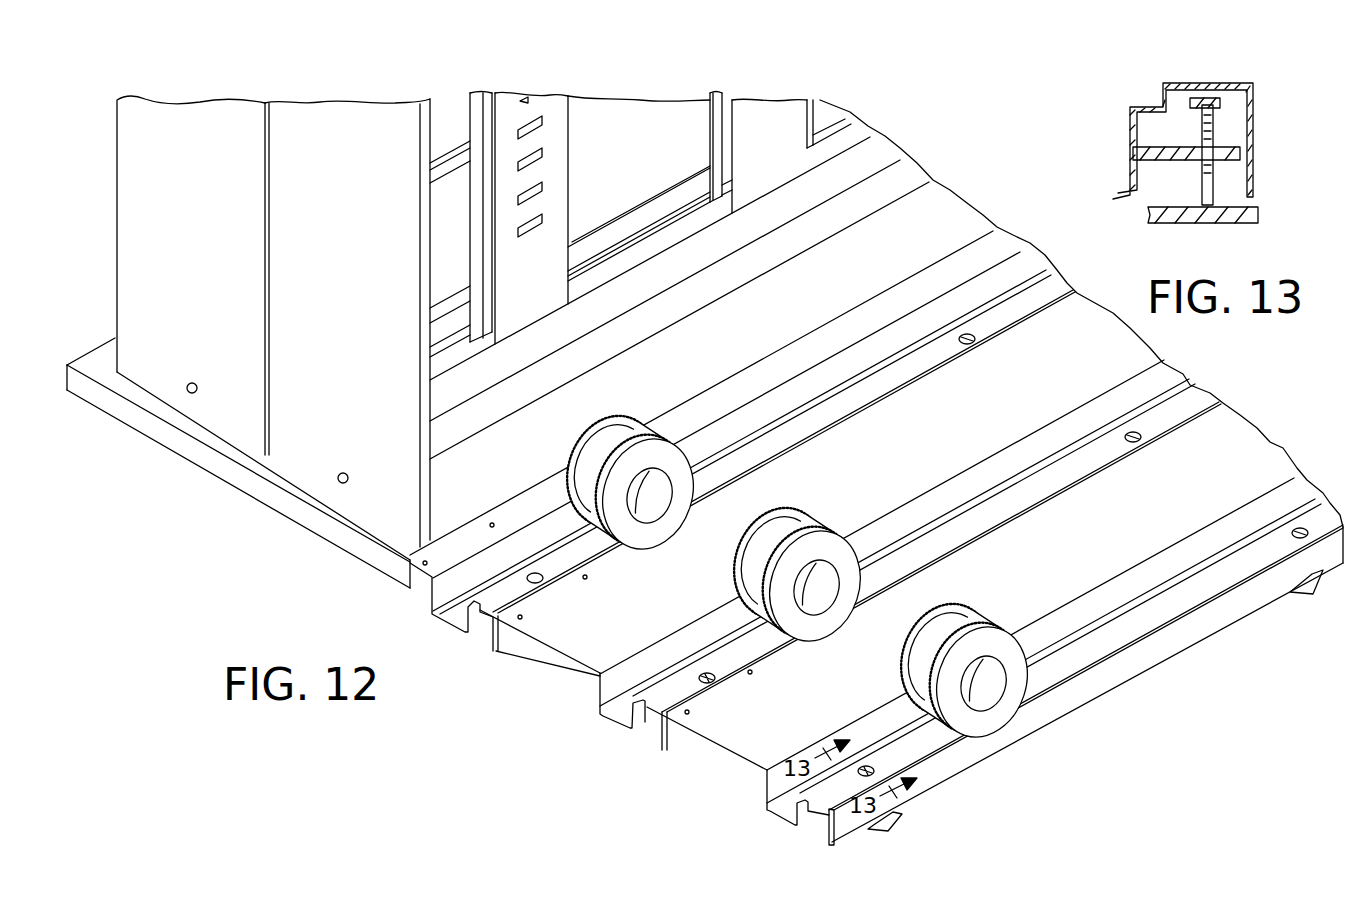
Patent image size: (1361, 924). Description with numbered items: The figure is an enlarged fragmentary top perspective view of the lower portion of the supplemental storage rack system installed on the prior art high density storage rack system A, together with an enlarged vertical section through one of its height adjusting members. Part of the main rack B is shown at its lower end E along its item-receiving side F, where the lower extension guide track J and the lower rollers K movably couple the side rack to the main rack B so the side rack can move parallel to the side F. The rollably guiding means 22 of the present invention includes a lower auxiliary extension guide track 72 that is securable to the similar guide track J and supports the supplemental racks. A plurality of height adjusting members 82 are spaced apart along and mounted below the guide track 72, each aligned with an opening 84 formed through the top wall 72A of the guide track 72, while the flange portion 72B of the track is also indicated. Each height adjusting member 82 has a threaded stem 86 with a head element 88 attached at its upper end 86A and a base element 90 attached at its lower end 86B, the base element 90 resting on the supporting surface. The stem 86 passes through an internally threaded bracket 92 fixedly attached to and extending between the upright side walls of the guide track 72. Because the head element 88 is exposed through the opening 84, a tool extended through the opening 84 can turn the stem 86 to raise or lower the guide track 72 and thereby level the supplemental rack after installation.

In FIG. 12, the high density storage rack system A is at (335, 86).
In FIG. 12, the main rack B is at (207, 118).
In FIG. 12, the lower end of main rack E is at (242, 430).
In FIG. 12, the side of main rack F is at (428, 298).
In FIG. 12, the lower extension guide track J is at (753, 372).
In FIG. 12, the lower rollers K is at (622, 430).
In FIG. 12, the rollably guiding means 22 is at (598, 757).
In FIG. 12, the lower auxiliary extension guide track 72 is at (587, 653).
In FIG. 13, the lower auxiliary extension guide track 72 is at (1162, 88).
In FIG. 12, the top wall 72A is at (1097, 647).
In FIG. 12, the flange of deck 72B is at (643, 718).
In FIG. 12, the height adjusting member 82 is at (712, 695).
In FIG. 13, the height adjusting member 82 is at (1127, 216).
In FIG. 12, the opening 84 is at (716, 680).
In FIG. 13, the opening 84 is at (1215, 85).
In FIG. 13, the threaded stem 86 is at (1215, 135).
In FIG. 13, the upper end of stem 86A is at (1215, 112).
In FIG. 13, the lower end of stem 86B is at (1215, 192).
In FIG. 12, the head element 88 is at (695, 660).
In FIG. 13, the head element 88 is at (1200, 97).
In FIG. 12, the base element 90 is at (878, 830).
In FIG. 13, the base element 90 is at (1245, 224).
In FIG. 13, the internally threaded bracket 92 is at (1160, 148).